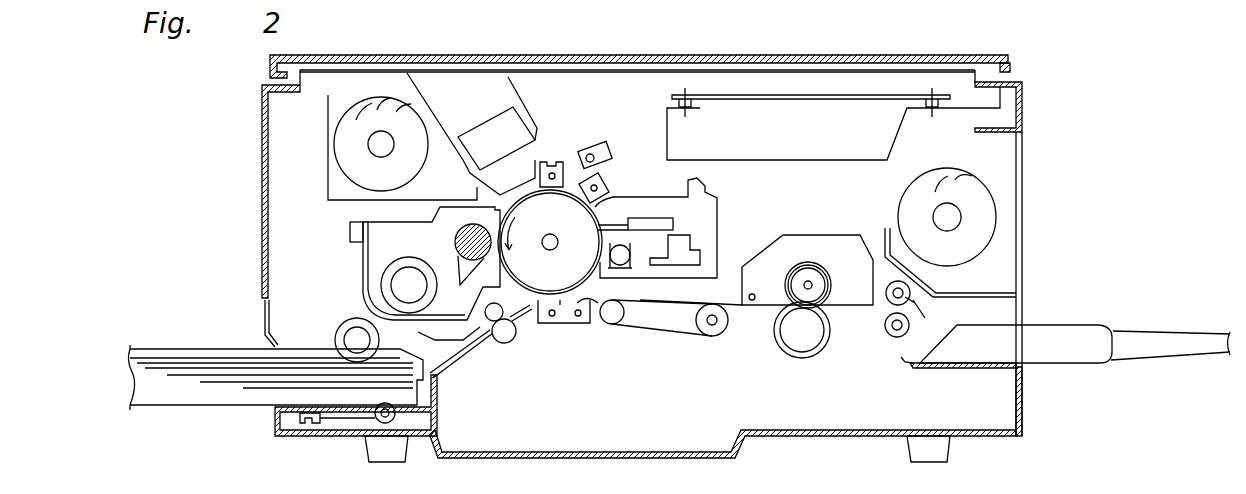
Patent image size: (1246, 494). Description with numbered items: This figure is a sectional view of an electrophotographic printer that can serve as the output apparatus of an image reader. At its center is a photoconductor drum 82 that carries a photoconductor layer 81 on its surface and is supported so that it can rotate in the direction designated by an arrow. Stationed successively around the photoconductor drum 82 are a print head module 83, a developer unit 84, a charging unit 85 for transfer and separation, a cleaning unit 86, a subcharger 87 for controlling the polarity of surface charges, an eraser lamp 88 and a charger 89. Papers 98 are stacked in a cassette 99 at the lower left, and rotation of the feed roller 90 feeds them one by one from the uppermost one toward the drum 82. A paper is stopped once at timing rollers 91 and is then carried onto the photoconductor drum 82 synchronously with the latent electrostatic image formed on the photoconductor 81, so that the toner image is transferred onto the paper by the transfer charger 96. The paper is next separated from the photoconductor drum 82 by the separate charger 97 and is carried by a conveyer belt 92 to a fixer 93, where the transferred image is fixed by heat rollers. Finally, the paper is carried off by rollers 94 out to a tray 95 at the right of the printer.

The photoconductor layer 81 is at (900, 37).
The photoconductor drum 82 is at (583, 281).
The print head module 83 is at (478, 113).
The developer unit 84 is at (412, 251).
The charging unit for transfer and separation 85 is at (564, 340).
The cleaning unit 86 is at (720, 227).
The subcharger 87 is at (603, 180).
The eraser lamp 88 is at (600, 140).
The charger 89 is at (552, 160).
The feed roller 90 is at (355, 325).
The timing rollers 91 is at (498, 345).
The conveyer belt 92 is at (660, 343).
The fixer 93 is at (769, 328).
The rollers 94 is at (892, 320).
The tray 95 is at (1063, 367).
The transfer charger 96 is at (543, 320).
The separate charger 97 is at (584, 322).
The papers 98 is at (243, 363).
The cassette 99 is at (223, 410).